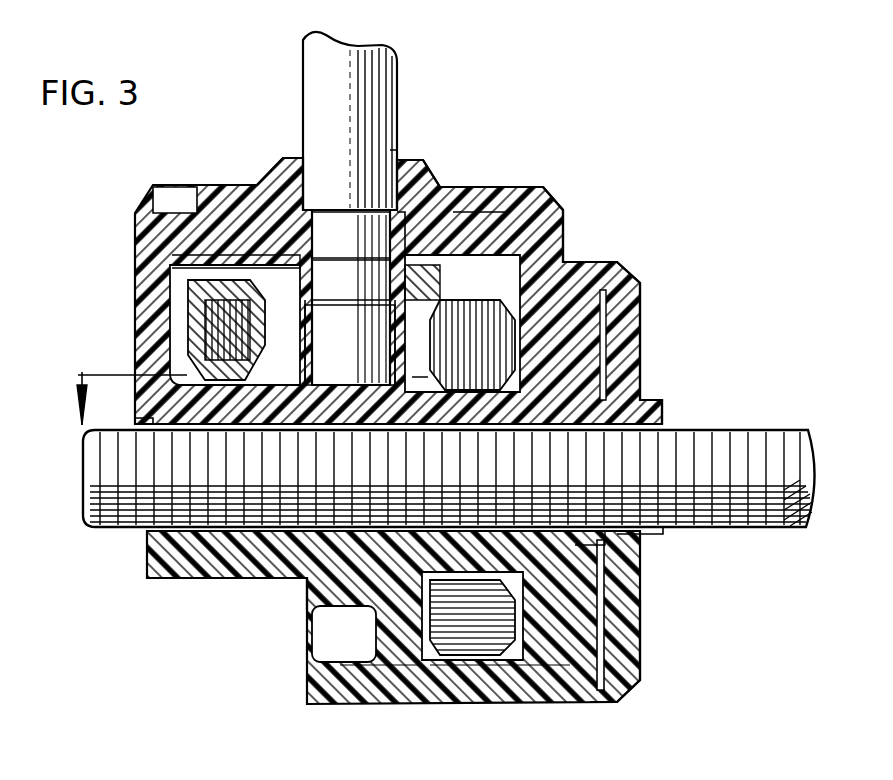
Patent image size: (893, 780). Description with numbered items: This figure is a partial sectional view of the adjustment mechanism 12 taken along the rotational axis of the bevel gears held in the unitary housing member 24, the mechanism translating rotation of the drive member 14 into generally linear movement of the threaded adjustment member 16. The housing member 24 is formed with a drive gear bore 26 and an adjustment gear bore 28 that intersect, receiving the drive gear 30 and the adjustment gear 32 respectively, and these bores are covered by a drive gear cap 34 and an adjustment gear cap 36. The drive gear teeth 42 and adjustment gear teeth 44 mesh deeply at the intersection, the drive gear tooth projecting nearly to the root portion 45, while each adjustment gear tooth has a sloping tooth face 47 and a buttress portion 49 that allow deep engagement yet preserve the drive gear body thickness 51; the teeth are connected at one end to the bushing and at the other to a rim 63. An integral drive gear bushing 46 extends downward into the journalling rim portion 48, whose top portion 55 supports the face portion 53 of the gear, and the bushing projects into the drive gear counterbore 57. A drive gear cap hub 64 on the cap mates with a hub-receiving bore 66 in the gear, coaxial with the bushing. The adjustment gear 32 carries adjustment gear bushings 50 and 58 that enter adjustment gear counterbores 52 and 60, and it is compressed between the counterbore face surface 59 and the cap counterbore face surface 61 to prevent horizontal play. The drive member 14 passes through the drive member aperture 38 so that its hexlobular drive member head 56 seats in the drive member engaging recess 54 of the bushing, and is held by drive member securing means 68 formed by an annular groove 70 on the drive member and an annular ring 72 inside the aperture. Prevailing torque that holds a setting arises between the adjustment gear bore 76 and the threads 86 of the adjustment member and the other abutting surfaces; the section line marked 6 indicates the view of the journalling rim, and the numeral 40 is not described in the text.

The adjustment mechanism 12 is at (156, 642).
The drive member 14 is at (316, 97).
The adjustment member 16 is at (755, 464).
The housing member 24 is at (147, 578).
The drive gear bore 26 is at (170, 291).
The adjustment gear bore 28 is at (478, 703).
The drive gear 30 is at (240, 266).
The adjustment gear 32 is at (616, 365).
The drive gear cap 34 is at (178, 210).
The adjustment gear cap 36 is at (615, 700).
The drive member aperture 38 is at (394, 158).
The shaft thread 40 is at (690, 530).
The drive gear teeth 42 is at (498, 356).
The adjustment gear teeth 44 is at (478, 611).
The root portion 45 is at (505, 703).
The drive gear bushing 46 is at (560, 285).
The sloping tooth face 47 is at (447, 703).
The journalling rim portion 48 is at (245, 385).
The buttress portion 49 is at (396, 703).
The adjustment gear bushing 50 is at (344, 634).
The drive gear body thickness 51 is at (540, 238).
The adjustment gear counterbore 52 is at (370, 703).
The face portion 53 is at (258, 332).
The drive member engaging recess 54 is at (305, 322).
The top portion 55 is at (140, 423).
The drive member head 56 is at (335, 350).
The drive gear counterbore 57 is at (212, 432).
The adjustment gear bushing 58 is at (641, 586).
The counterbore face surface 59 is at (288, 580).
The adjustment gear counterbore 60 is at (660, 405).
The cap counterbore face surface 61 is at (580, 548).
The rim 63 is at (528, 703).
The drive gear cap hub 64 is at (427, 255).
The hub-receiving bore 66 is at (455, 215).
The drive member securing means 68 is at (396, 222).
The annular groove 70 is at (342, 232).
The annular ring 72 is at (290, 205).
The adjustment gear bore 76 is at (602, 463).
The threads 86 is at (102, 529).
The section line 6- 6 is at (250, 392).